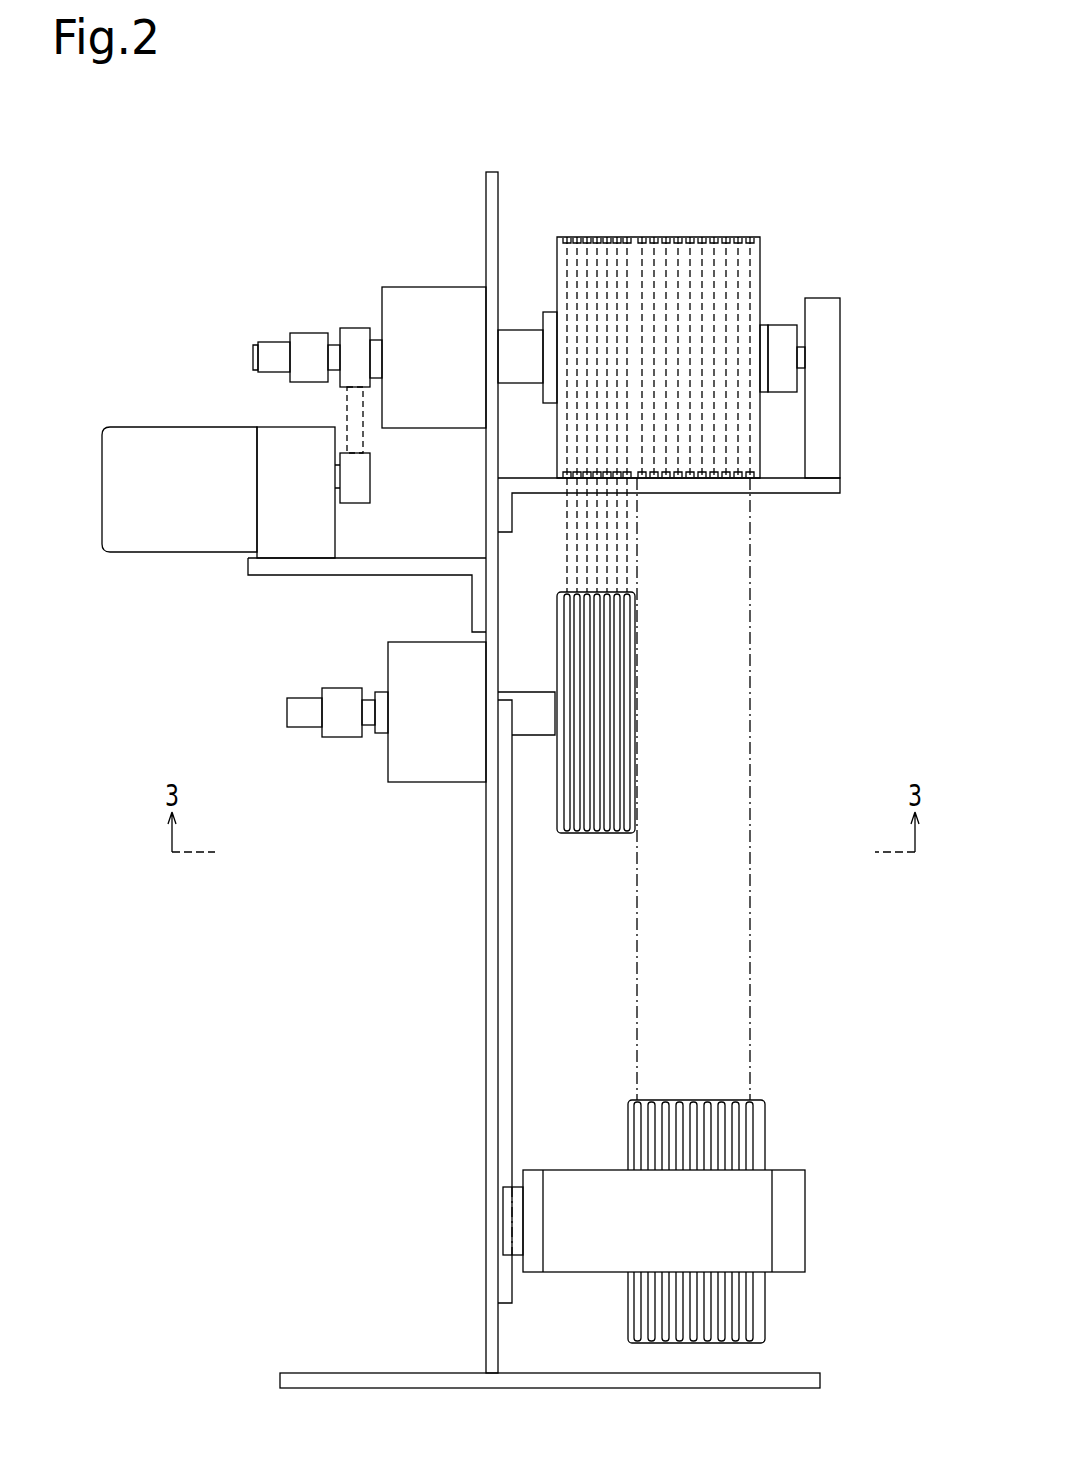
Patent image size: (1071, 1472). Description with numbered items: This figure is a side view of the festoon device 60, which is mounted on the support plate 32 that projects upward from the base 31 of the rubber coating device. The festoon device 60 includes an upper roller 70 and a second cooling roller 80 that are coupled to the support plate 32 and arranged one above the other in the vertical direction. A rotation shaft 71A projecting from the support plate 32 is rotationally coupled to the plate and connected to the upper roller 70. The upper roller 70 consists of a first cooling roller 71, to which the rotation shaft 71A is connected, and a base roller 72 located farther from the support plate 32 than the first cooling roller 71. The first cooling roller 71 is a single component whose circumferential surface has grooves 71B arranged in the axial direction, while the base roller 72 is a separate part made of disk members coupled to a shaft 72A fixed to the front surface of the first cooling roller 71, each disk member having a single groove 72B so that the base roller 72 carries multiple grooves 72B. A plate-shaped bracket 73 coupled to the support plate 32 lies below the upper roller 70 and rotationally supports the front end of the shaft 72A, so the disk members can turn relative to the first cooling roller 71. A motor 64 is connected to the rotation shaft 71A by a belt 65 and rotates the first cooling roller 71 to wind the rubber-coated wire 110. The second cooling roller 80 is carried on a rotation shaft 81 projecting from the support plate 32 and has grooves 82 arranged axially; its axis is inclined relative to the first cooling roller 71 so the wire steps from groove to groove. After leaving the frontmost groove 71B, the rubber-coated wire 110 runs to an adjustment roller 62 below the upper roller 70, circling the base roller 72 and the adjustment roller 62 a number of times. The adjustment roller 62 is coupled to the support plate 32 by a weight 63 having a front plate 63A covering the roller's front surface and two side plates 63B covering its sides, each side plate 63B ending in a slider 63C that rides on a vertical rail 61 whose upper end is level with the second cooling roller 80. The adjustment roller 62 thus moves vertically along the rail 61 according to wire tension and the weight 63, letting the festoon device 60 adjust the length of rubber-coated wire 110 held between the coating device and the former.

The base 31 is at (344, 1373).
The support plate 32 is at (486, 985).
The festoon device 60 is at (844, 140).
The rail 61 is at (512, 1020).
The adjustment roller 62 is at (767, 1108).
The weight 63 is at (648, 1259).
The front plate 63A is at (794, 1240).
The side plate 63B is at (580, 1272).
The slider 63C is at (504, 1220).
The motor 64 is at (150, 427).
The belt 65 is at (362, 438).
The upper roller 70 is at (669, 280).
The first cooling roller 71 is at (571, 301).
The rotation shaft 71A is at (516, 330).
The grooves 71B is at (625, 237).
The base roller 72 is at (738, 301).
The shaft 72A is at (799, 347).
The groove 72B is at (752, 237).
The bracket 73 is at (845, 482).
The second cooling roller 80 is at (584, 746).
The rotation shaft 81 is at (531, 692).
The grooves 82 is at (624, 834).
The rubber-coated wire 110 is at (753, 598).